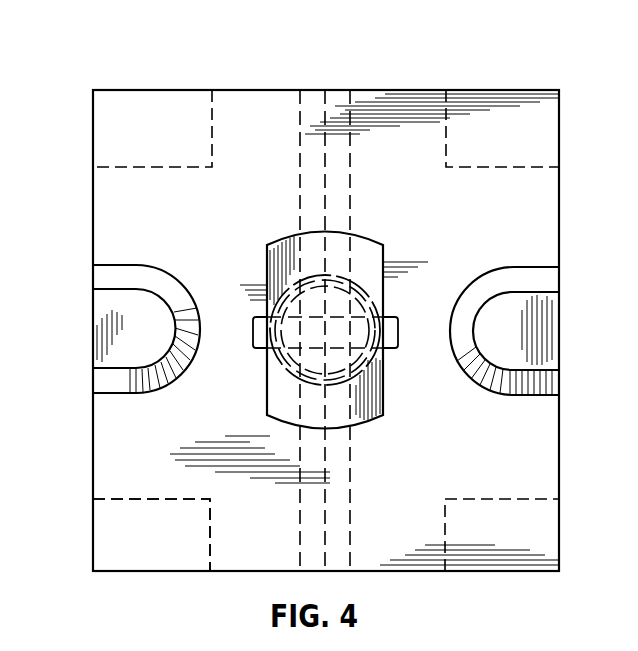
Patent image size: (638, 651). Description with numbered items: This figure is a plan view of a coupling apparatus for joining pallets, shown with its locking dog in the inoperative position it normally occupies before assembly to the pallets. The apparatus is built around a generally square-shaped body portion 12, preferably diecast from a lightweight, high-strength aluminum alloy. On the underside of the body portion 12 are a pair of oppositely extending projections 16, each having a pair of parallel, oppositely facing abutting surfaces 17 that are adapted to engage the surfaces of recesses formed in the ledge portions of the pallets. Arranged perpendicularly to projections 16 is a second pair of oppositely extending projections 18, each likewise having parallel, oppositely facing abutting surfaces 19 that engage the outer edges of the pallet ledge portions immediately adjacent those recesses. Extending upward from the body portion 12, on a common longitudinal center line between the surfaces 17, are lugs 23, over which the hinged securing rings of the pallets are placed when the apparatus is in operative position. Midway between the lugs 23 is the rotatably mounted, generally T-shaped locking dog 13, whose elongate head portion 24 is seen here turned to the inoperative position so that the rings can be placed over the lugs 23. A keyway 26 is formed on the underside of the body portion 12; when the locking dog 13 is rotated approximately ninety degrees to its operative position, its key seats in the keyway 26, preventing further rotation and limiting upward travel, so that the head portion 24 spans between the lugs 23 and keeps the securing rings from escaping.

The body portion 12 is at (402, 135).
The locking dog 13 is at (360, 252).
The projections 16 is at (93, 195).
The abutting surfaces 17 is at (128, 500).
The projections 18 is at (250, 90).
The abutting surfaces 19 is at (208, 535).
The lugs 23 is at (541, 325).
The elongate head portion 24 is at (385, 408).
The keyway 26 is at (299, 125).